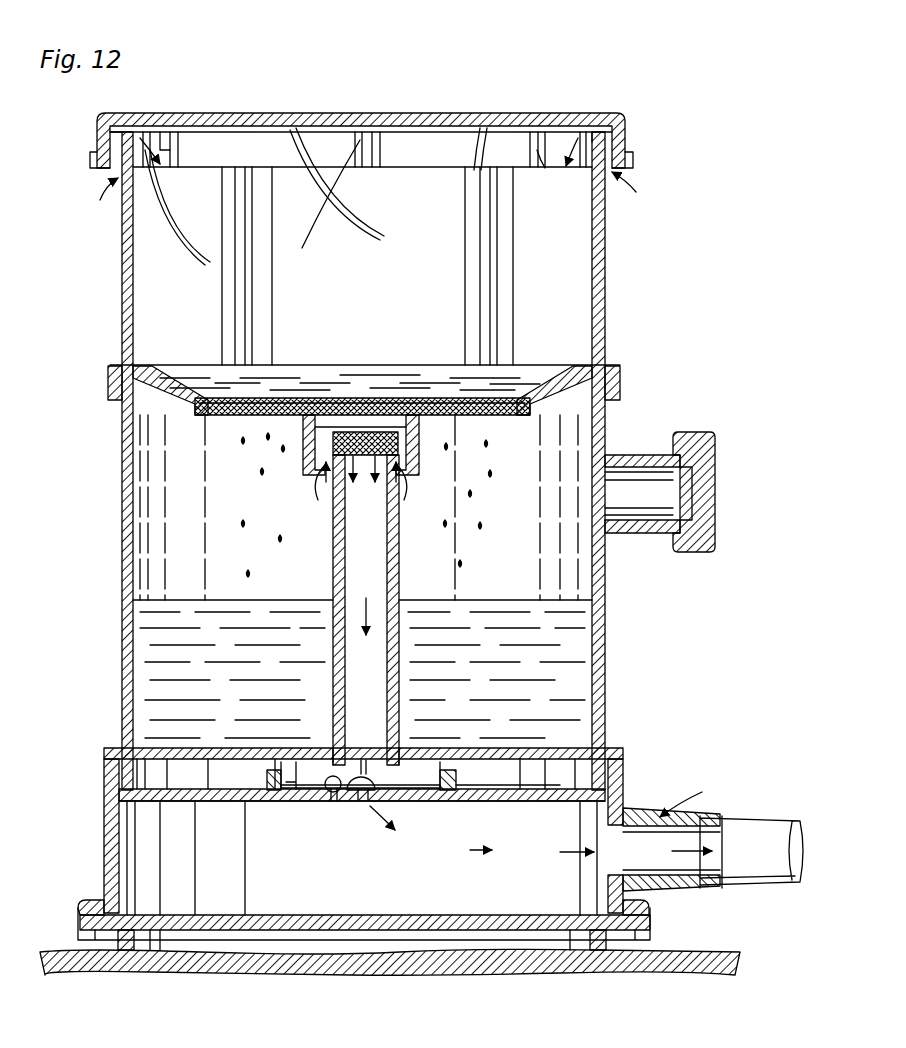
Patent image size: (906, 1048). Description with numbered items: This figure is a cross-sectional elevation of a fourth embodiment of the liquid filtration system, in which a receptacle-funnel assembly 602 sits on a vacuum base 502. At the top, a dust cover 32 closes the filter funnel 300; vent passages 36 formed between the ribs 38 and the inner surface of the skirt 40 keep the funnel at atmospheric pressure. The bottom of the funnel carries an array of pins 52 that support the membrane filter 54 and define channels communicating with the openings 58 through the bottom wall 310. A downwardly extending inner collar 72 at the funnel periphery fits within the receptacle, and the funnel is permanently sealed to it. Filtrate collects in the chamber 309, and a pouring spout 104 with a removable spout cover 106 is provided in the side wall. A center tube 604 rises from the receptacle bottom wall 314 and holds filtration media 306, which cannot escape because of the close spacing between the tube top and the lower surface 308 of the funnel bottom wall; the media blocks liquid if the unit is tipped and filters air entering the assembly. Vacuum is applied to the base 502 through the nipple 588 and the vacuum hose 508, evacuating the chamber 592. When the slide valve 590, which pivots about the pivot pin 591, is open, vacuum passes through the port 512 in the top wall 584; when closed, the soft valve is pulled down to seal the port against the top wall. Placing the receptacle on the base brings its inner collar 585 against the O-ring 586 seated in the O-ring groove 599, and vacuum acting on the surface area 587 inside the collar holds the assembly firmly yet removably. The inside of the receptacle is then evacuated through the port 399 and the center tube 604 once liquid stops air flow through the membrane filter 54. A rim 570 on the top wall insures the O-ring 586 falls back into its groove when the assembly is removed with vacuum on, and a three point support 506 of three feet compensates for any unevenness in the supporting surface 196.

The dust cover 32 is at (498, 112).
The vent passages 36 is at (456, 126).
The ribs 38 is at (372, 127).
The skirt 40 is at (630, 140).
The filter funnel 300 is at (608, 272).
The pins 52 is at (296, 400).
The bottom wall 310 is at (328, 398).
The lower surface 308 is at (380, 430).
The membrane filter 54 is at (478, 396).
The inner collar 72 is at (622, 393).
The openings 58 is at (468, 417).
The filtration media 306 is at (395, 455).
The chamber 309 is at (359, 507).
The center tube 604 is at (399, 546).
The spout cover 106 is at (712, 517).
The pouring spout 104 is at (648, 535).
The receptacle 602 is at (607, 645).
The surface area 587 is at (312, 758).
The port 399 is at (385, 752).
The inner collar 585 is at (434, 765).
The bottom wall 314 is at (560, 758).
The base 502 is at (702, 778).
The nipple 588 is at (690, 812).
The vacuum hose 508 is at (733, 817).
The top wall 584 is at (232, 805).
The O-ring 586 is at (280, 802).
The O-ring groove 599 is at (296, 803).
The pivot pin 591 is at (340, 801).
The slide valve 590 is at (400, 790).
The port 512 is at (408, 838).
The rim 570 is at (498, 802).
The chamber 592 is at (490, 892).
The surface 196 is at (68, 950).
The three point support 506 is at (128, 950).